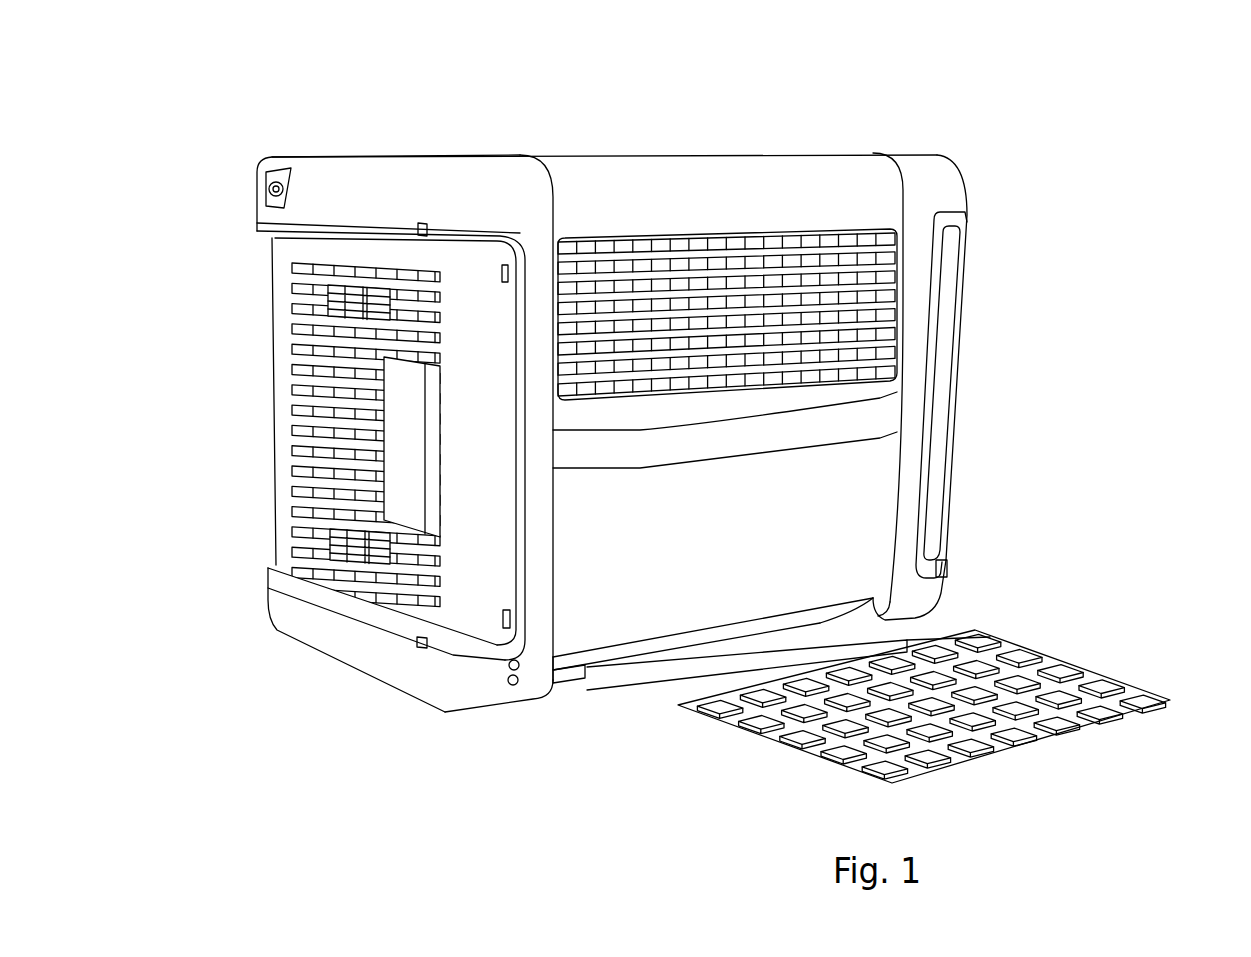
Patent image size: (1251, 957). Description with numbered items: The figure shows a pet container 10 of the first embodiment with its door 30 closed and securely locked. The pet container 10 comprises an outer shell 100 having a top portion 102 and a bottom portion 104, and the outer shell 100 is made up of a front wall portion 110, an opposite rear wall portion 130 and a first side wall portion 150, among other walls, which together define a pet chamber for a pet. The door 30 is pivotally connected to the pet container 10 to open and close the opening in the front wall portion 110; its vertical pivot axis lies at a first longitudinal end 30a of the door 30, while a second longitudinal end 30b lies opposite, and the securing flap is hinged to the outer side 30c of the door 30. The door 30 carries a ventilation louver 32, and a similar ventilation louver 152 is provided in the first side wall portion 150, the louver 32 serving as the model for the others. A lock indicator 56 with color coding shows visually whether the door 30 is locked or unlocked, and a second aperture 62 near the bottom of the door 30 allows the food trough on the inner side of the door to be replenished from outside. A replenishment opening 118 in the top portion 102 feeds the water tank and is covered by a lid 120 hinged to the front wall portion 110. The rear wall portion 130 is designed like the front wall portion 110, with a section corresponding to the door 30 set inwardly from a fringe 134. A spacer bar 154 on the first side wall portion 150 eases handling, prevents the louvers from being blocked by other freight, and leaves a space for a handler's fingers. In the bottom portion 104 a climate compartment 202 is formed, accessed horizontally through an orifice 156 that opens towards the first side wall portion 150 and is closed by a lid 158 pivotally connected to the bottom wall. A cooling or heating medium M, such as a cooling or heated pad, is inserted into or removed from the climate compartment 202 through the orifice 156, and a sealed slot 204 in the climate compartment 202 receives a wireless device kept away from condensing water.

The pet container 10 is at (819, 124).
The door 30 is at (285, 392).
The first longitudinal end 30a is at (288, 493).
The second longitudinal end 30b is at (478, 622).
The outer side 30c is at (455, 298).
The ventilation louver 32 is at (315, 300).
The lock indicator 56 is at (418, 224).
The second aperture 62 is at (335, 522).
The outer shell 100 is at (716, 184).
The top portion 102 is at (1046, 236).
The bottom portion 104 is at (995, 540).
The front wall portion 110 is at (371, 653).
The replenishment opening 118 is at (270, 160).
The lid 120 is at (264, 126).
The rear wall portion 130 is at (957, 240).
The fringe 134 is at (938, 545).
The first side wall portion 150 is at (704, 540).
The ventilation louver 152 is at (828, 322).
The spacer bar 154 is at (877, 405).
The orifice 156 is at (870, 602).
The lid 158 is at (607, 700).
The climate compartment 202 is at (683, 655).
The slot 204 is at (568, 682).
The cooling or heating medium M is at (1110, 740).